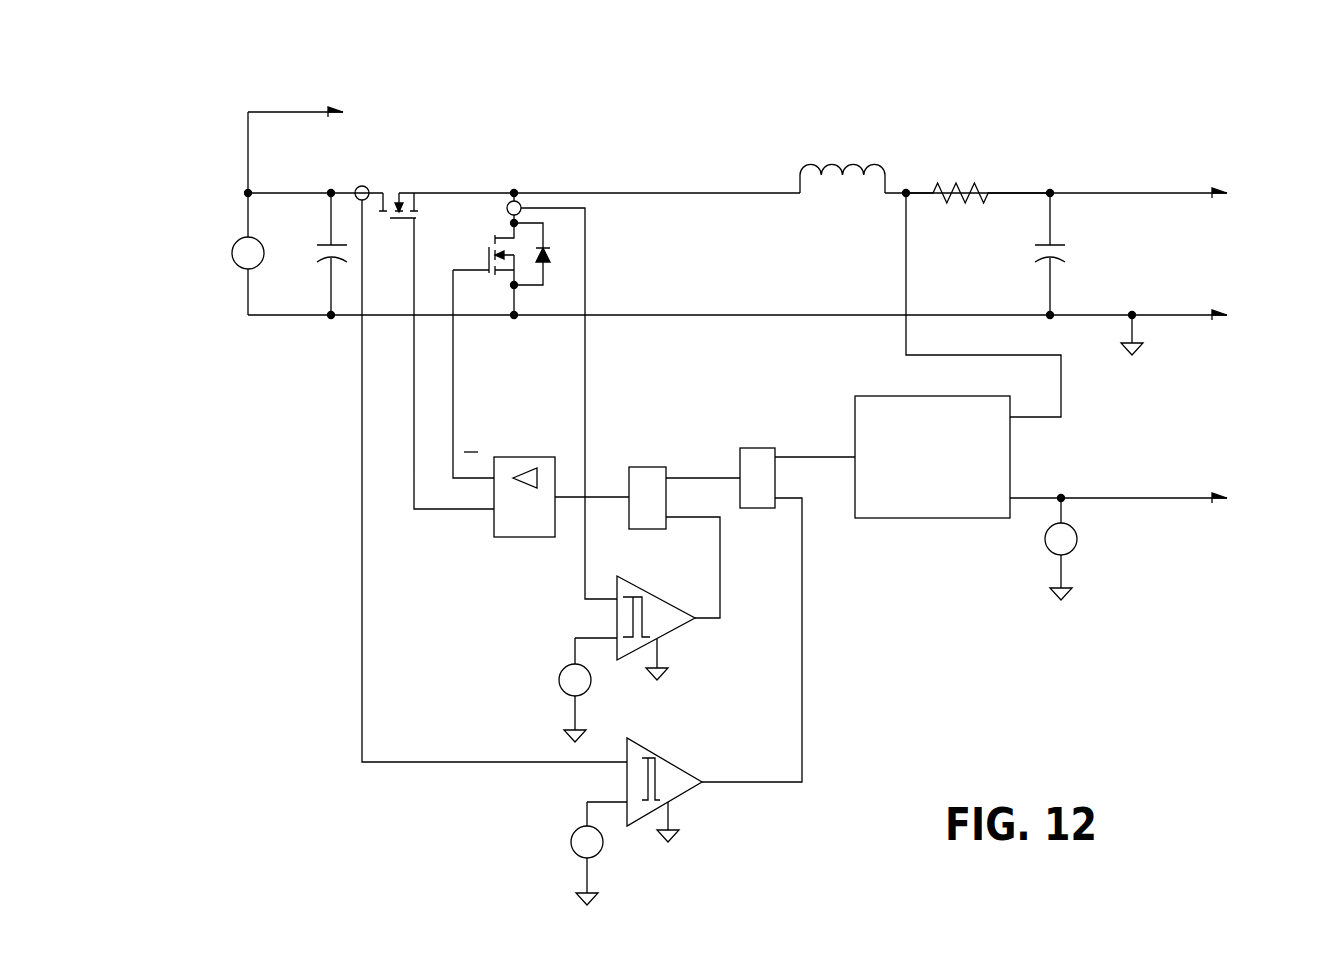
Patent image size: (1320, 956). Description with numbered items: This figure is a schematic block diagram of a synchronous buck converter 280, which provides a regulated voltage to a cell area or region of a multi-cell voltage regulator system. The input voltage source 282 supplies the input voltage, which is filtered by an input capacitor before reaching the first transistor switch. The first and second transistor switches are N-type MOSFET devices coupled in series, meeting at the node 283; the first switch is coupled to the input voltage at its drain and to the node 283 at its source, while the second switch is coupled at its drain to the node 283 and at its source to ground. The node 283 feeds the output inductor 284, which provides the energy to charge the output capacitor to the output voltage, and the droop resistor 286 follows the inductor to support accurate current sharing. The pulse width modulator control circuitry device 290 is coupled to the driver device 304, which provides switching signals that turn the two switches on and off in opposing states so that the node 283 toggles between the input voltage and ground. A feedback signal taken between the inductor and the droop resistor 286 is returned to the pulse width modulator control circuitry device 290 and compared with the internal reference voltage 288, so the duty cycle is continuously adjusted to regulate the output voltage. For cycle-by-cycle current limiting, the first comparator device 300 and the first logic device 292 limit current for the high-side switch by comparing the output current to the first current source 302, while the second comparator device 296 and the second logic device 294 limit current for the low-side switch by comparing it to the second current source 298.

The synchronous buck converter 280 is at (1143, 96).
The input voltage source 282 is at (230, 277).
The node 283 is at (540, 156).
The output inductor 284 is at (818, 160).
The droop resistor 286 is at (963, 177).
The internal reference voltage 288 is at (1087, 545).
The pulse width modulator control circuitry device 290 is at (918, 396).
The first logic device 292 is at (757, 448).
The second logic device 294 is at (644, 467).
The second comparator device 296 is at (633, 583).
The current limit source ILIM2 298 is at (553, 699).
The first comparator device 300 is at (660, 753).
The current limit source ILIM1 302 is at (560, 823).
The driver device 304 is at (511, 457).